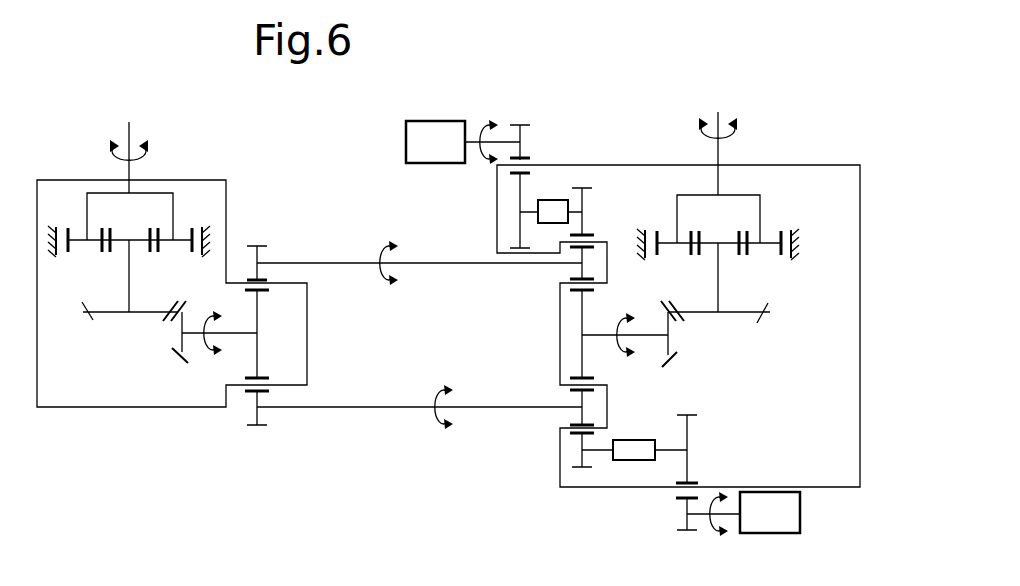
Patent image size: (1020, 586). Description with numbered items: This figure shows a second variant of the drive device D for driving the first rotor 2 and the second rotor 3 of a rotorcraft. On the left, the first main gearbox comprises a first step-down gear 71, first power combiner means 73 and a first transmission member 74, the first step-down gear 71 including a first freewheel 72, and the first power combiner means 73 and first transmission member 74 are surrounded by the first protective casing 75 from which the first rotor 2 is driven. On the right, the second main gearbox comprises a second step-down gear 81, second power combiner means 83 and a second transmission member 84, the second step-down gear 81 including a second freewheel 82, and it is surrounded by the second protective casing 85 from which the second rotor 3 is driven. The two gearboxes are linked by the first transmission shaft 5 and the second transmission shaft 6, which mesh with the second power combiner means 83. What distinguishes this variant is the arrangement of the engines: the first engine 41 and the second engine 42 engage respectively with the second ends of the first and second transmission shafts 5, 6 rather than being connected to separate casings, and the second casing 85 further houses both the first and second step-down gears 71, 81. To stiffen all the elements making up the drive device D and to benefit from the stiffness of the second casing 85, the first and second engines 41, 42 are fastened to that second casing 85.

The first rotor 2 is at (128, 130).
The second rotor 3 is at (718, 122).
The first transmission shaft 5 is at (411, 407).
The second transmission shaft 6 is at (327, 263).
The first engine 41 is at (406, 140).
The second engine 42 is at (800, 514).
The first step-down gear 71 is at (518, 202).
The first freewheel 72 is at (551, 200).
The first power combiner means 73 is at (257, 313).
The first transmission member 74 is at (167, 192).
The first protective casing 75 is at (127, 407).
The second step-down gear 81 is at (687, 462).
The second freewheel 82 is at (635, 460).
The second power combiner means 83 is at (582, 360).
The second transmission member 84 is at (752, 195).
The second protective casing 85 is at (860, 408).
The drive device D is at (328, 440).